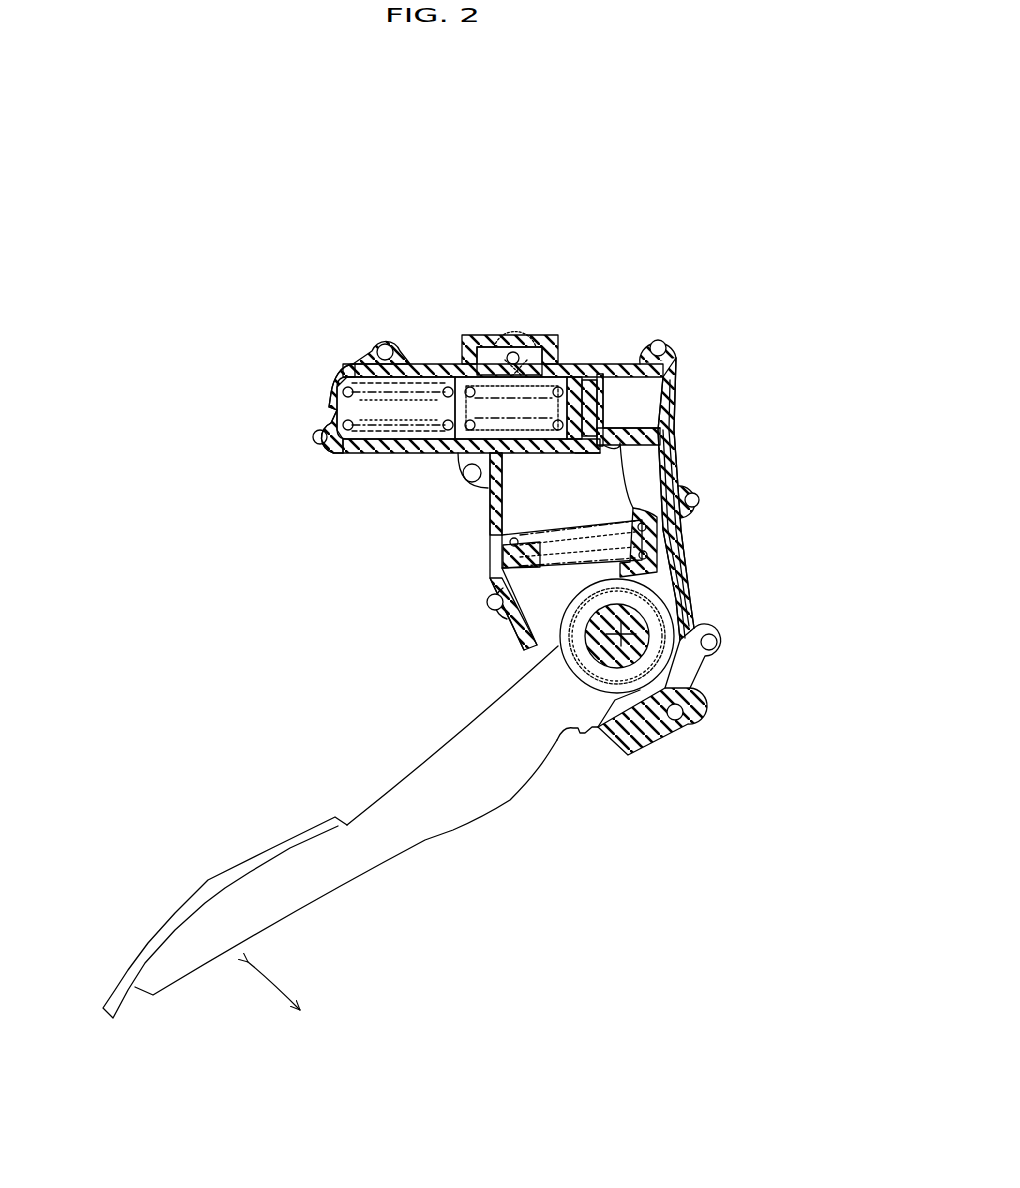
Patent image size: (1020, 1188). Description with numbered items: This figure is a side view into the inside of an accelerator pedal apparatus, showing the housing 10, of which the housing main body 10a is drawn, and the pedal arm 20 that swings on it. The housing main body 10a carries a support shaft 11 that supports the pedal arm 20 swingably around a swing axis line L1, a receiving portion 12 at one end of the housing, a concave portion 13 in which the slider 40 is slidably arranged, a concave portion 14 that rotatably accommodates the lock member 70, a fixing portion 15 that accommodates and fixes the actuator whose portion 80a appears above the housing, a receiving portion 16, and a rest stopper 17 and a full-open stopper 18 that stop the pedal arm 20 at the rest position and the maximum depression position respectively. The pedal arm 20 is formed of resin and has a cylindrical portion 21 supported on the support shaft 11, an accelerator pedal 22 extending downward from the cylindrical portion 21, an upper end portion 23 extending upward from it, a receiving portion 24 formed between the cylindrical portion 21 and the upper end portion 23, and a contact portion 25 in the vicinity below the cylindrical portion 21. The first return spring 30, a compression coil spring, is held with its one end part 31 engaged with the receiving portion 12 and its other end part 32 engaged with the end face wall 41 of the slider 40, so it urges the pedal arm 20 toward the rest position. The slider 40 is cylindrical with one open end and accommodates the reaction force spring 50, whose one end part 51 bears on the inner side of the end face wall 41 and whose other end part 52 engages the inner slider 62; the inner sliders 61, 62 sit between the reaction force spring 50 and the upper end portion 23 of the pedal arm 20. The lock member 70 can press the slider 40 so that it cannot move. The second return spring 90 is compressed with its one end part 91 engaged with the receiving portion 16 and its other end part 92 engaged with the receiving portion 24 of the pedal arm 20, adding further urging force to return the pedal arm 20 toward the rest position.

The housing 10 is at (472, 376).
The housing main body 10a is at (472, 388).
The support shaft 11 is at (676, 632).
The receiving portion 12 is at (326, 404).
The concave portion 13 is at (396, 408).
The concave portion 14 is at (515, 291).
The fixing portion 15 is at (526, 345).
The receiving portion 16 is at (490, 560).
The rest stopper 17 is at (721, 521).
The full-open stopper 18 is at (643, 740).
The pedal arm 20 is at (371, 832).
The cylindrical portion 21 is at (687, 653).
The accelerator pedal 22 is at (248, 860).
The upper end portion 23 is at (640, 400).
The receiving portion 24 is at (598, 554).
The contact portion 25 is at (606, 742).
The first return spring 30 is at (391, 440).
The one end part 31 is at (347, 434).
The other end part 32 is at (446, 432).
The slider 40 is at (501, 349).
The end face wall 41 is at (452, 367).
The reaction force spring 50 is at (534, 482).
The one end part 51 is at (472, 485).
The other end part 52 is at (586, 447).
The inner slider 61 is at (603, 376).
The inner slider 62 is at (584, 376).
The lock member 70 is at (527, 366).
The ball element 80a is at (513, 350).
The second return spring 90 is at (579, 524).
The one end part 91 is at (515, 539).
The other end part 92 is at (638, 524).
The swing axis line L1 is at (630, 634).